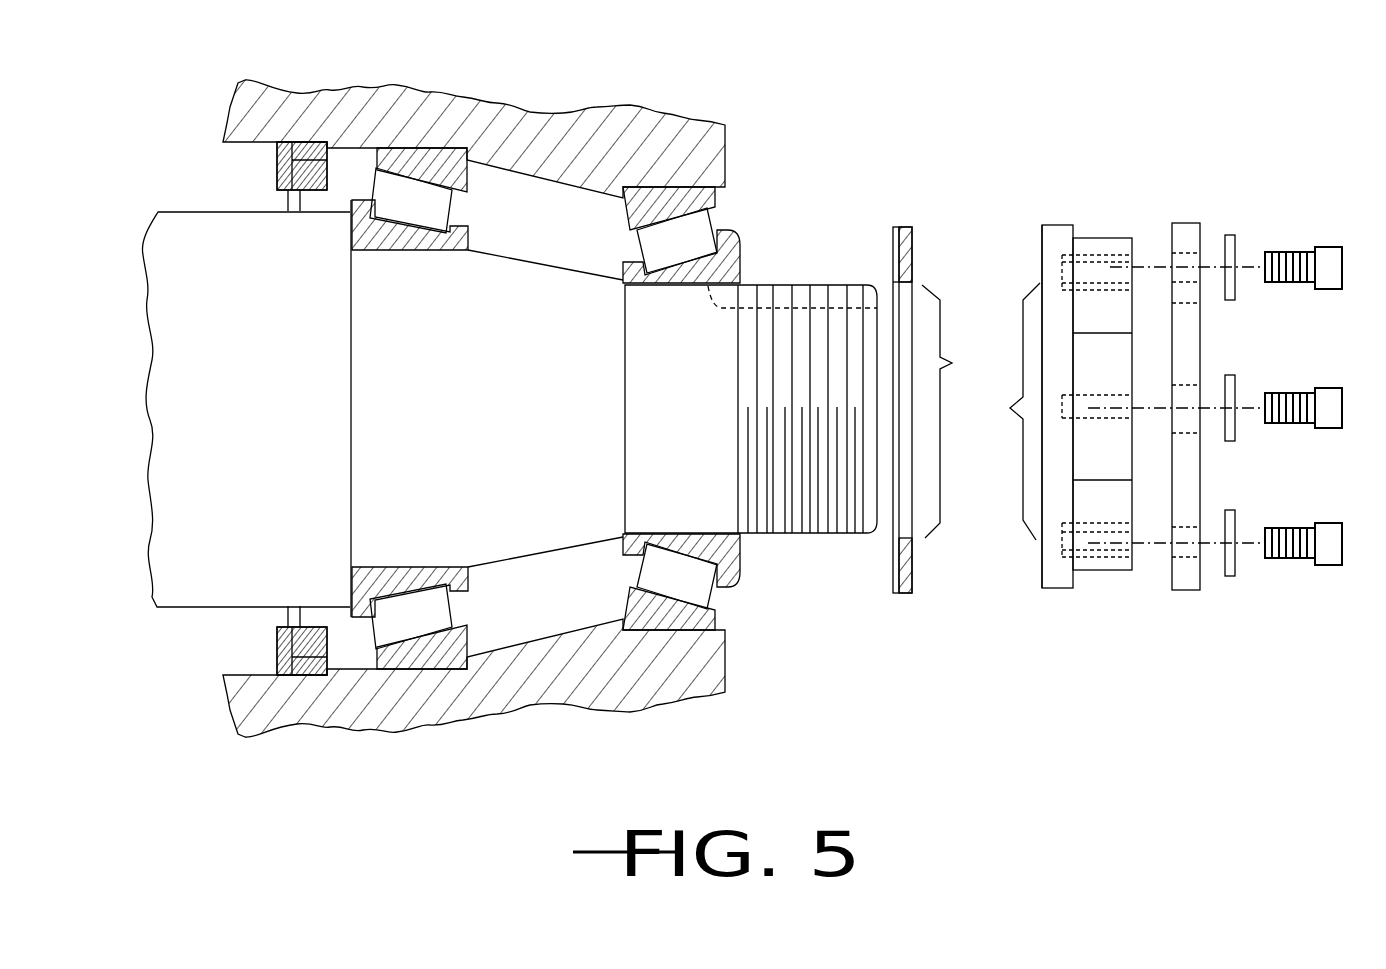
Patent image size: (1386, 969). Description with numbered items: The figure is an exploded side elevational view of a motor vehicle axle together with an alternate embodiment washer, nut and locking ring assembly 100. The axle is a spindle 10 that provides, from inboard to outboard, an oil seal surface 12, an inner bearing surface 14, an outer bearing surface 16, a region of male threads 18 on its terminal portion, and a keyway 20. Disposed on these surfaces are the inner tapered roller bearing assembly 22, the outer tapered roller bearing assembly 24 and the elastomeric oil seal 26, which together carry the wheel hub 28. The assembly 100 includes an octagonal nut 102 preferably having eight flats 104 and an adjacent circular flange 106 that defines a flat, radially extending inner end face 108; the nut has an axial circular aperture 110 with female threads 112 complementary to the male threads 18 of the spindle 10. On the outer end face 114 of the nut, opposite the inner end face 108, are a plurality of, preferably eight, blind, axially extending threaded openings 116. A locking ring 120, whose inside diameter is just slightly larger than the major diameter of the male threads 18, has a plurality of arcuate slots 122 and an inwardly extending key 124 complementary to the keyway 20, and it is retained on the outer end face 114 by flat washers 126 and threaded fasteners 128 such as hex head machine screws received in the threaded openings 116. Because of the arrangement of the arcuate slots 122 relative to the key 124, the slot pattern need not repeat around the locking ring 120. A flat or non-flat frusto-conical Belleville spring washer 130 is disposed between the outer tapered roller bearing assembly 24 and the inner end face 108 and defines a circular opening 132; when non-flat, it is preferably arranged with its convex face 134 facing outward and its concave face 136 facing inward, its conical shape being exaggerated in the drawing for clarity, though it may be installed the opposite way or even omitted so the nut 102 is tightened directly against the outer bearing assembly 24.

The spindle 10 is at (813, 120).
The oil seal surface 12 is at (247, 207).
The inner bearing surface 14 is at (413, 252).
The outer bearing surface 16 is at (680, 287).
The region of male threads 18 is at (803, 503).
The keyway 20 is at (770, 305).
The inner tapered roller bearing assembly 22 is at (406, 190).
The outer tapered roller bearing assembly 24 is at (677, 228).
The elastomeric oil seal 26 is at (277, 635).
The wheel hub 28 is at (522, 138).
The washer, nut and locking ring assembly 100 is at (1113, 90).
The octagonal nut 102 is at (1142, 362).
The flats 104 is at (1113, 360).
The circular flange 106 is at (1055, 578).
The inner end face 108 is at (1042, 543).
The axial circular aperture 110 is at (1001, 411).
The female threads 112 is at (1070, 312).
The outer end face 114 is at (1133, 507).
The threaded openings 116 is at (1110, 250).
The locking ring 120 is at (1237, 381).
The arcuate slots 122 is at (1180, 383).
The key 124 is at (1187, 293).
The flat washers 126 is at (1233, 423).
The threaded fasteners 128 is at (1332, 247).
The washer 130 is at (892, 364).
The circular opening 132 is at (960, 411).
The convex face 134 is at (912, 252).
The concave face 136 is at (893, 262).